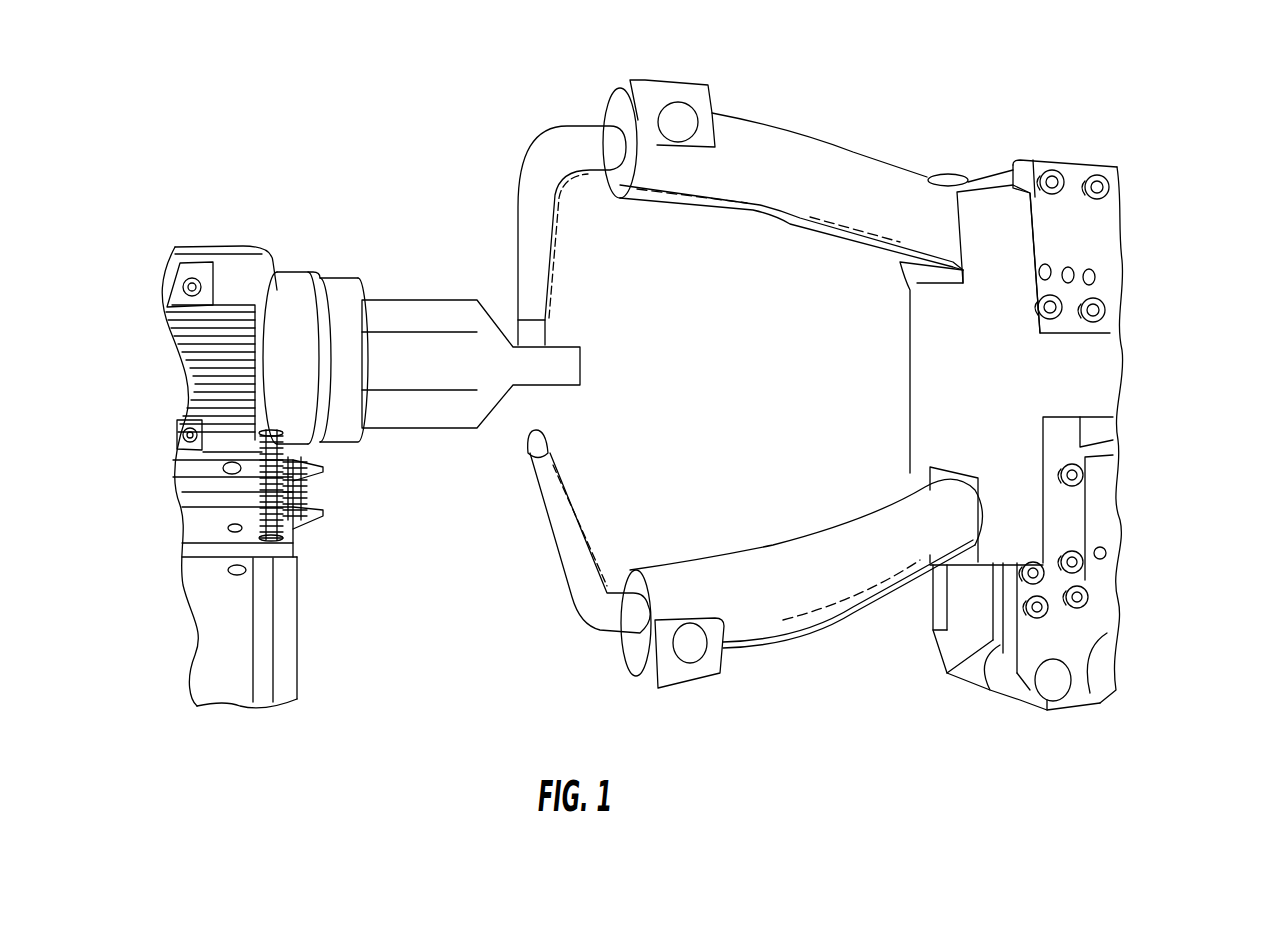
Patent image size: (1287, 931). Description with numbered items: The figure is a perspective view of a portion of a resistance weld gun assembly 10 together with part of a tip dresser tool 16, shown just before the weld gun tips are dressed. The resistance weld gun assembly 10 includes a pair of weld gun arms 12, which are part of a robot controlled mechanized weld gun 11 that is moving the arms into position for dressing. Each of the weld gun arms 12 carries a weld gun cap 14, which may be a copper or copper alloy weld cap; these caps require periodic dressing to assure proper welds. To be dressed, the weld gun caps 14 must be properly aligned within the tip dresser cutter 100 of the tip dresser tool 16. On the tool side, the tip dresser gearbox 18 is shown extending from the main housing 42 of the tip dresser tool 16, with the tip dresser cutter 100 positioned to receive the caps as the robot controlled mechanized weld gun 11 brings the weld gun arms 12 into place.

The resistance weld gun assembly 10 is at (1187, 200).
The robot controlled mechanized weld gun 11 is at (1057, 160).
The weld gun arms 12 is at (796, 130).
The weld gun cap 14 is at (534, 332).
The tip dresser tool 16 is at (205, 245).
The tip dresser gearbox 18 is at (420, 297).
The main housing 42 is at (333, 287).
The tip dresser cutter 100 is at (532, 390).